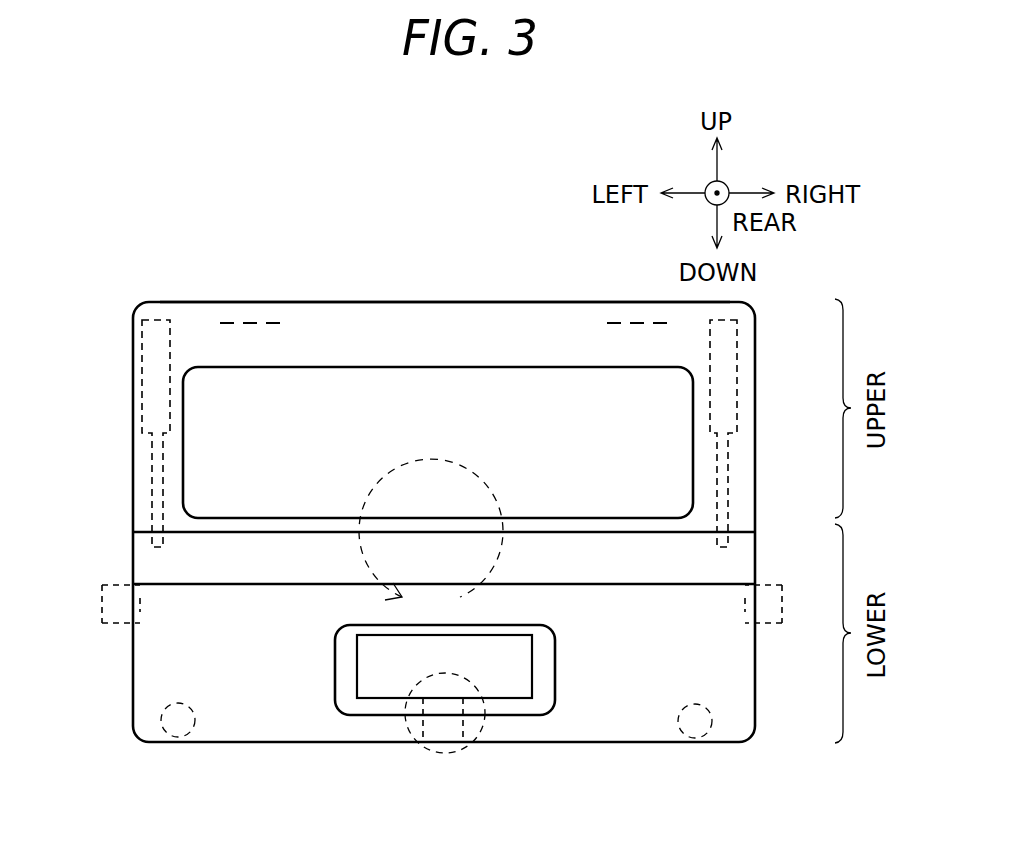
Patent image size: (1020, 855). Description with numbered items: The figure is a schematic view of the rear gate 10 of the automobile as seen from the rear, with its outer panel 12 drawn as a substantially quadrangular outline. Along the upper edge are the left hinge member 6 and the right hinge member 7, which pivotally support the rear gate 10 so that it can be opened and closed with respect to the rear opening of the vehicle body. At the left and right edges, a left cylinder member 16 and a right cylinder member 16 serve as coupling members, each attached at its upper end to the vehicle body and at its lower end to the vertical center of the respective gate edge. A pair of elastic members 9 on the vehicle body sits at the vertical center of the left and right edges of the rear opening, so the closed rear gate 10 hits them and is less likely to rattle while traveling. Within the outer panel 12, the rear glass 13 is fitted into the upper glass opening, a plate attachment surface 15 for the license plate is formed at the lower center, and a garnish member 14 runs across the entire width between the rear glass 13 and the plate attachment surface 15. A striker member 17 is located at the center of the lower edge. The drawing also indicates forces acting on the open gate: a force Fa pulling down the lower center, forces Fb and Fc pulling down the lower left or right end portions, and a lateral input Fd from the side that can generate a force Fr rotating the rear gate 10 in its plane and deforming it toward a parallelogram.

The left hinge member 6 is at (259, 296).
The right hinge member 7 is at (626, 300).
The elastic members 9 is at (105, 624).
The rear gate 10 is at (438, 272).
The outer panel 12 is at (338, 317).
The rear glass 13 is at (202, 420).
The garnish member 14 is at (202, 555).
The plate attachment surface 15 is at (482, 680).
The cylinder member 16 is at (129, 368).
The striker member 17 is at (418, 748).
The force Fa is at (477, 743).
The force Fb is at (197, 743).
The force Fc is at (713, 742).
The lateral input force Fd is at (118, 708).
The rotating force Fr is at (431, 529).